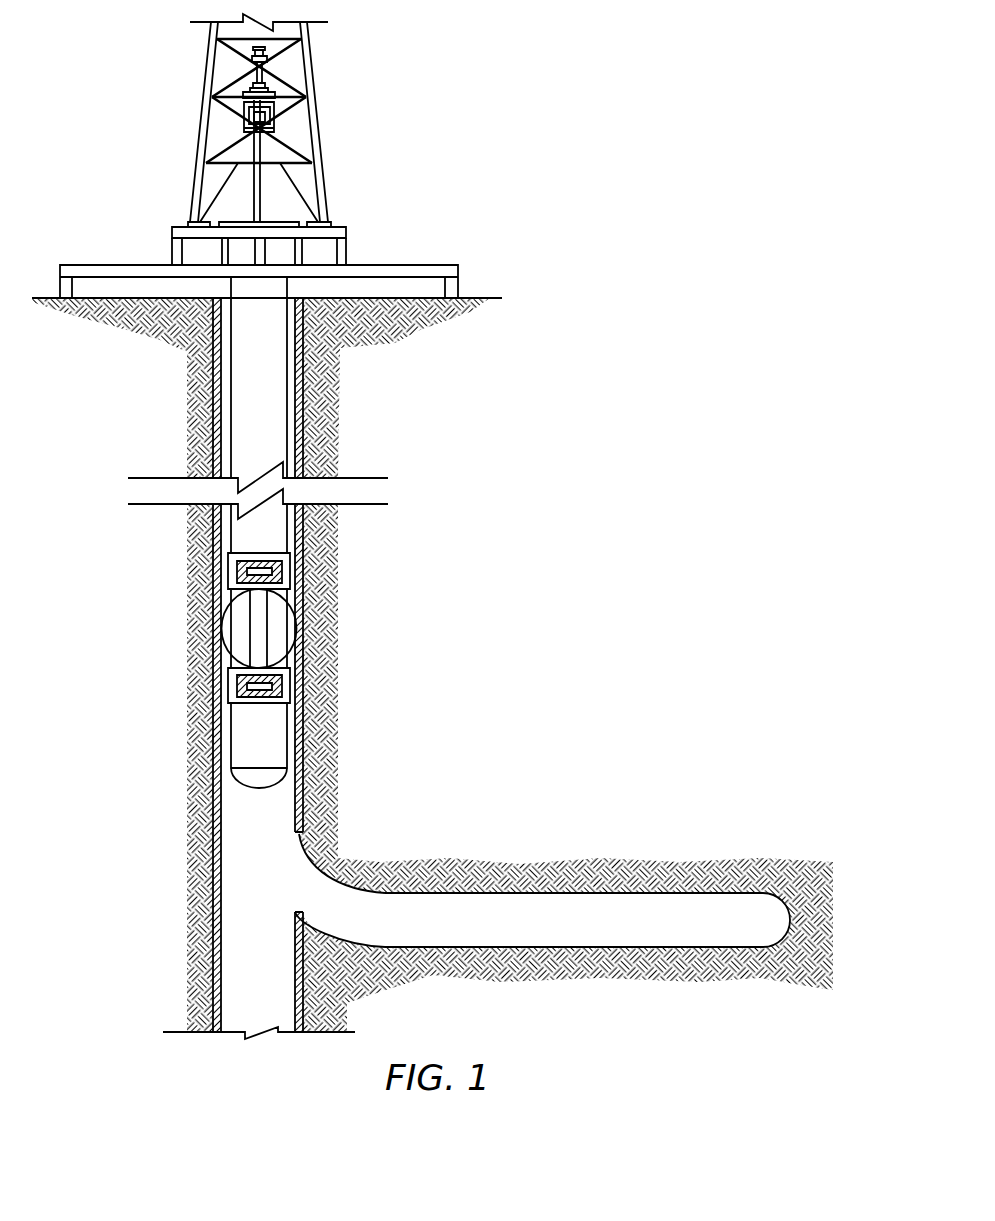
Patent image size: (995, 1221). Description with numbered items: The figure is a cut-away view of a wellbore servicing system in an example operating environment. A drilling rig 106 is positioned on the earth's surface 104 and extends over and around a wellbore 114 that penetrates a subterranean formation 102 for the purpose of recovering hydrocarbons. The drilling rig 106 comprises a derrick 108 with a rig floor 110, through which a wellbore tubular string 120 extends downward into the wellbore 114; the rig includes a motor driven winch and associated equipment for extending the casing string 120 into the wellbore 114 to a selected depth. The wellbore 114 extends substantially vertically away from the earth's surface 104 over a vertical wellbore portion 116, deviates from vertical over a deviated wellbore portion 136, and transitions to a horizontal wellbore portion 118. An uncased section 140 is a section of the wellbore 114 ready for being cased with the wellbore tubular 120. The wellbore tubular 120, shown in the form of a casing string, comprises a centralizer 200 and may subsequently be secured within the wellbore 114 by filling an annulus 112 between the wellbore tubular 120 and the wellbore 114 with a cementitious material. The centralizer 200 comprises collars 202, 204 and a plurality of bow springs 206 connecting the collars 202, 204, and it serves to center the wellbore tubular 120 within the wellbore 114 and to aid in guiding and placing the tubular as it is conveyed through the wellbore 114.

The subterranean formation 102 is at (358, 325).
The earth's surface 104 is at (476, 298).
The drilling rig 106 is at (378, 101).
The derrick 108 is at (208, 72).
The rig floor 110 is at (178, 226).
The annulus 112 is at (230, 375).
The wellbore 114 is at (217, 417).
The vertical wellbore portion 116 is at (303, 578).
The horizontal wellbore portion 118 is at (435, 962).
The wellbore tubular string 120 is at (288, 515).
The deviated wellbore portion 136 is at (335, 852).
The uncased section 140 is at (510, 887).
The centralizer 200 is at (228, 592).
The collar 202 is at (228, 686).
The collar 204 is at (228, 556).
The bow springs 206 is at (295, 598).